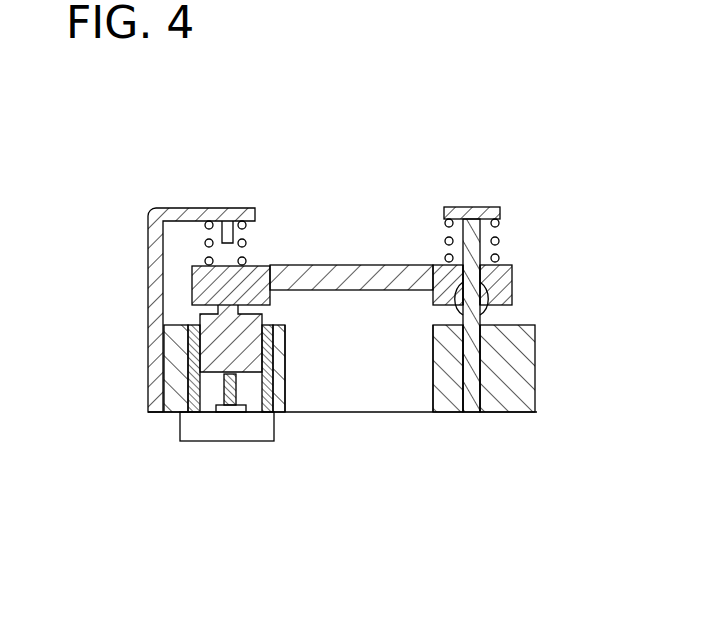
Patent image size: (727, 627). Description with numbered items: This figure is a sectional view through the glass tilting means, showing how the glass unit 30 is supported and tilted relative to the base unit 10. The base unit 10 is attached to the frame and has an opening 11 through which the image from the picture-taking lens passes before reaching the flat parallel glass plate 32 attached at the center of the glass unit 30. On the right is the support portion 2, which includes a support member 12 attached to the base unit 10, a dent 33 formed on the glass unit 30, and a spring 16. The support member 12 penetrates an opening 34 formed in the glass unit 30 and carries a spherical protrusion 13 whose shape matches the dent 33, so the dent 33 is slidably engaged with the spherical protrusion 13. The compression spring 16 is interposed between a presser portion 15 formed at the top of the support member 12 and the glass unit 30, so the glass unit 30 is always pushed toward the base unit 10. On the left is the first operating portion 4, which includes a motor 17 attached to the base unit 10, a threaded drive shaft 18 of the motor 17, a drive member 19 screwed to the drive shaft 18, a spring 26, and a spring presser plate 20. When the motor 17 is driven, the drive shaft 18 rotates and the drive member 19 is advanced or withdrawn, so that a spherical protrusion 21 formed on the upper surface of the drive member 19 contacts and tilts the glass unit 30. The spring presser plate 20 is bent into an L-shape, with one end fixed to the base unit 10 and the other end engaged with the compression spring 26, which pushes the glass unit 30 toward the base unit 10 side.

The support portion 2 is at (554, 213).
The first operating portion 4 is at (136, 203).
The base unit 10 is at (524, 368).
The opening 11 is at (377, 402).
The support member 12 is at (500, 244).
The spherical protrusion 13 is at (486, 314).
The presser portion 15 is at (475, 250).
The spring 16 is at (499, 222).
The motor 17 is at (257, 432).
The threaded drive shaft 18 is at (218, 396).
The drive member 19 is at (207, 358).
The spring presser plate 20 is at (153, 243).
The spherical protrusion 21 is at (219, 310).
The spring 26 is at (208, 221).
The glass unit 30 is at (193, 285).
The flat parallel glass plate 32 is at (327, 270).
The dent 33 is at (473, 330).
The opening 34 is at (462, 258).